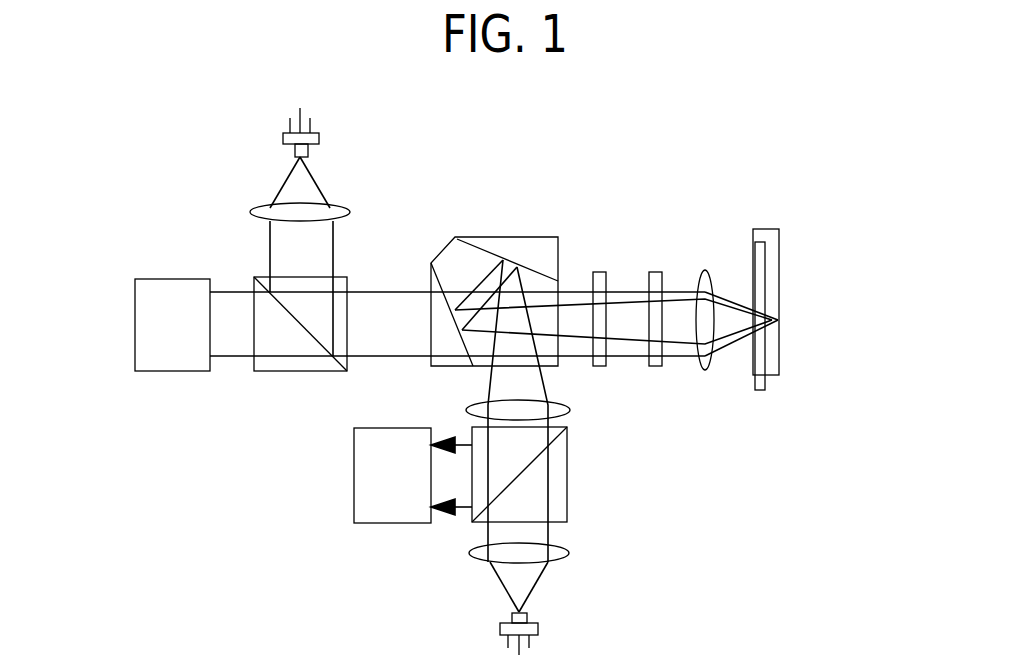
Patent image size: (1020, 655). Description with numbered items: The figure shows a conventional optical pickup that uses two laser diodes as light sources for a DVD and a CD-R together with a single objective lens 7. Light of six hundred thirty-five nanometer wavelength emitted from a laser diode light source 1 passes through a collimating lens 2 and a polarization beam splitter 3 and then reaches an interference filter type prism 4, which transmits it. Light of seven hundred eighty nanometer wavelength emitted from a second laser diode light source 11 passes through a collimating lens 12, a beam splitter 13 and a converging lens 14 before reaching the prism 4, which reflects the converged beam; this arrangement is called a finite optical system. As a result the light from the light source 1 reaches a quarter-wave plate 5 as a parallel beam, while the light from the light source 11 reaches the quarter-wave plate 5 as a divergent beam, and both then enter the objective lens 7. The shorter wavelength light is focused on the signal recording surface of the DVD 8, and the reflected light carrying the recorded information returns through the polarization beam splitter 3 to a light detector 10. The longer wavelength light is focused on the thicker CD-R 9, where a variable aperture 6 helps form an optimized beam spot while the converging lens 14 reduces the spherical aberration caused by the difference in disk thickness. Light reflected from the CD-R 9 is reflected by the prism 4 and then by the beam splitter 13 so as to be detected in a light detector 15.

The laser diode light source 1 is at (320, 137).
The collimating lens 2 is at (345, 210).
The polarization beam splitter 3 is at (284, 372).
The interference filter type prism 4 is at (502, 237).
The quarter-wave plate 5 is at (600, 272).
The variable aperture 6 is at (655, 272).
The objective lens 7 is at (705, 272).
The DVD 8 is at (766, 383).
The CD-R 9 is at (780, 250).
The light detector 10 is at (135, 322).
The laser diode light source 11 is at (538, 628).
The collimating lens 12 is at (570, 553).
The beam splitter 13 is at (567, 468).
The converging lens 14 is at (570, 405).
The light detector 15 is at (354, 486).